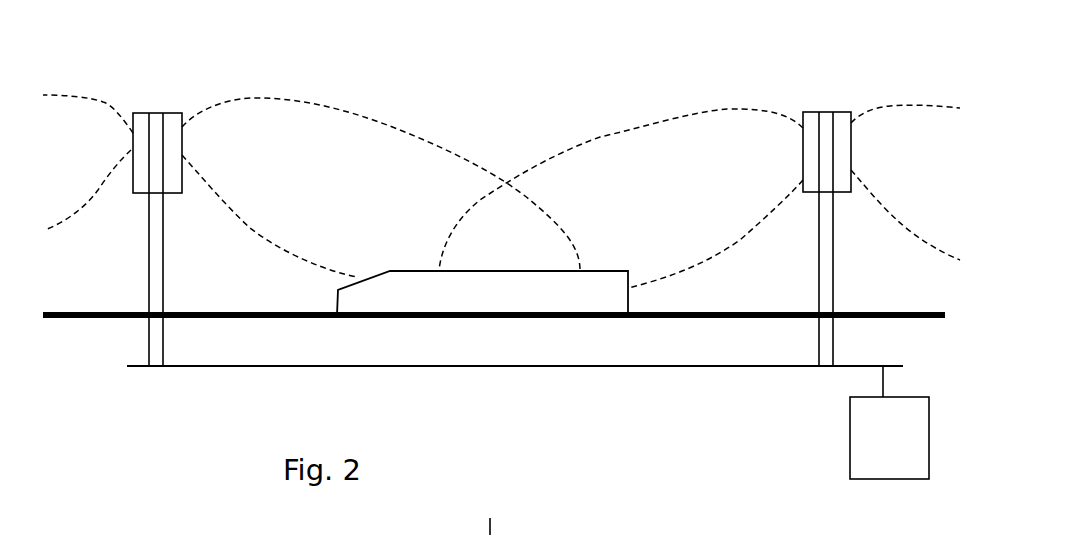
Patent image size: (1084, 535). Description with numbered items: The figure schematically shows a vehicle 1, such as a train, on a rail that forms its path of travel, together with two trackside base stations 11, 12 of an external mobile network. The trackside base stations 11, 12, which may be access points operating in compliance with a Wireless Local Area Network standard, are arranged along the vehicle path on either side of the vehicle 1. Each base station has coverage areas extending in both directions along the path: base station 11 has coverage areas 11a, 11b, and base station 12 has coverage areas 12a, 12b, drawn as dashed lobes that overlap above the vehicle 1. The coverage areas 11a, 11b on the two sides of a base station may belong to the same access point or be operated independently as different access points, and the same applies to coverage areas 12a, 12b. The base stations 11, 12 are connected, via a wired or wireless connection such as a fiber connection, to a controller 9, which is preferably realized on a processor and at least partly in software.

The vehicle 1 is at (603, 298).
The controller 9 is at (850, 445).
The trackside base station 11 is at (157, 115).
The coverage area 11a is at (58, 92).
The coverage area 11b is at (347, 108).
The trackside base station 12 is at (822, 112).
The coverage area 12a is at (707, 108).
The coverage area 12b is at (934, 107).